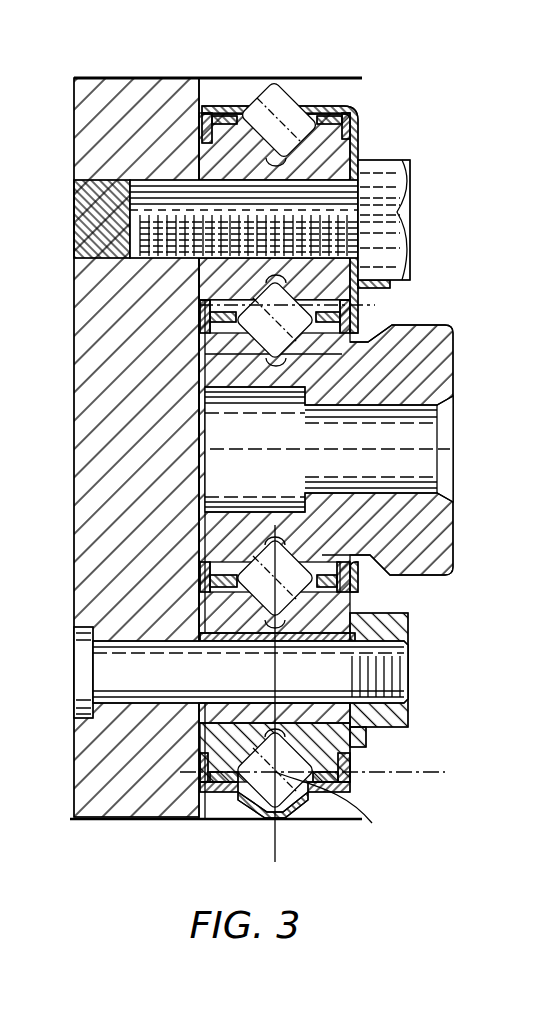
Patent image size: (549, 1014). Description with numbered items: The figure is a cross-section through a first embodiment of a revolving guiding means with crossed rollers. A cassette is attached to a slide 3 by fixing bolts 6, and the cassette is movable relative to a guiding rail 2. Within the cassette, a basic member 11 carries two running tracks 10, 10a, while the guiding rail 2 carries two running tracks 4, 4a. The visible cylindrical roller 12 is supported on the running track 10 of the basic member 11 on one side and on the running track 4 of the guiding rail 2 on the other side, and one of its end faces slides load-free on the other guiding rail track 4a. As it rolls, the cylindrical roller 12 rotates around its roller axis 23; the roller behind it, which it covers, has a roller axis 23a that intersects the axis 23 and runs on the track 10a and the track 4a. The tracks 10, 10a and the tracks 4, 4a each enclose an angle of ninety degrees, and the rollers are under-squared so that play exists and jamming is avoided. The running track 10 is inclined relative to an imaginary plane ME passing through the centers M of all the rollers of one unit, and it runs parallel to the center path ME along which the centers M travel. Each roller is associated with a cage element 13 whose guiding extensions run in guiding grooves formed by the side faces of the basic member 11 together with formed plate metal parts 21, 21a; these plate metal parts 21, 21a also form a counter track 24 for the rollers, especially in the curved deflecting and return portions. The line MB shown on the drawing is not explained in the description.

The guiding rail 2 is at (438, 352).
The slide 3 is at (135, 750).
The running track 4 is at (208, 562).
The running track 4a is at (348, 568).
The fixing bolt 6 is at (410, 209).
The running track 10 is at (205, 306).
The track 10a is at (352, 304).
The basic member 11 is at (228, 163).
The cylindrical roller 12 is at (250, 121).
The cage element 13 is at (358, 112).
The formed plate metal part 21 is at (272, 775).
The formed plate metal part 21a is at (352, 784).
The roller axis 23 is at (257, 353).
The roller axis 23a is at (343, 613).
The counter track 24 is at (240, 788).
The roller center M is at (330, 809).
The bearing axis plane MB is at (332, 778).
The imaginary plane / center path ME is at (270, 709).